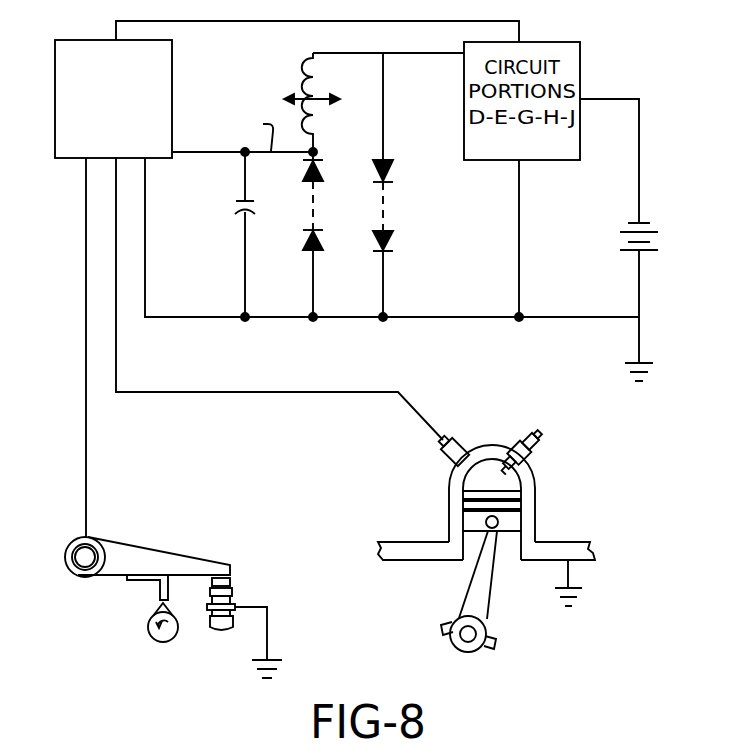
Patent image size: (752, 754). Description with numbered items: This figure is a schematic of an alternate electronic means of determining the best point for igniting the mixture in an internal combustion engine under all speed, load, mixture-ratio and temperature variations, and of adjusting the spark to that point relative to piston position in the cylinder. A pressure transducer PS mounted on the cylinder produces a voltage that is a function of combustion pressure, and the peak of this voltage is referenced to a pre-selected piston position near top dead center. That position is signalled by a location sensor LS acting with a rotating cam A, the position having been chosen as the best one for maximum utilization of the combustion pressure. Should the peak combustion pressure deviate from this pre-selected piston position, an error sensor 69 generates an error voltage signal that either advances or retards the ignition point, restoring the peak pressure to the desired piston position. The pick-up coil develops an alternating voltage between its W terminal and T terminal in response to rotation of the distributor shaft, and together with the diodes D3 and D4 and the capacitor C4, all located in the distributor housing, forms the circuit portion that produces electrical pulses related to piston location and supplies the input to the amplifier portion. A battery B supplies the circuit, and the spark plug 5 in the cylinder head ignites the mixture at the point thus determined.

The error sensor 69 is at (53, 86).
The W terminal W is at (312, 98).
The T terminal T is at (258, 134).
The capacitor C4 is at (263, 234).
The diode D3 is at (328, 234).
The diode D4 is at (398, 185).
The battery B is at (629, 208).
The pressure transducer PS is at (452, 439).
The spark plug 5 is at (548, 434).
The location sensor LS is at (156, 607).
The rotating cam A is at (152, 614).